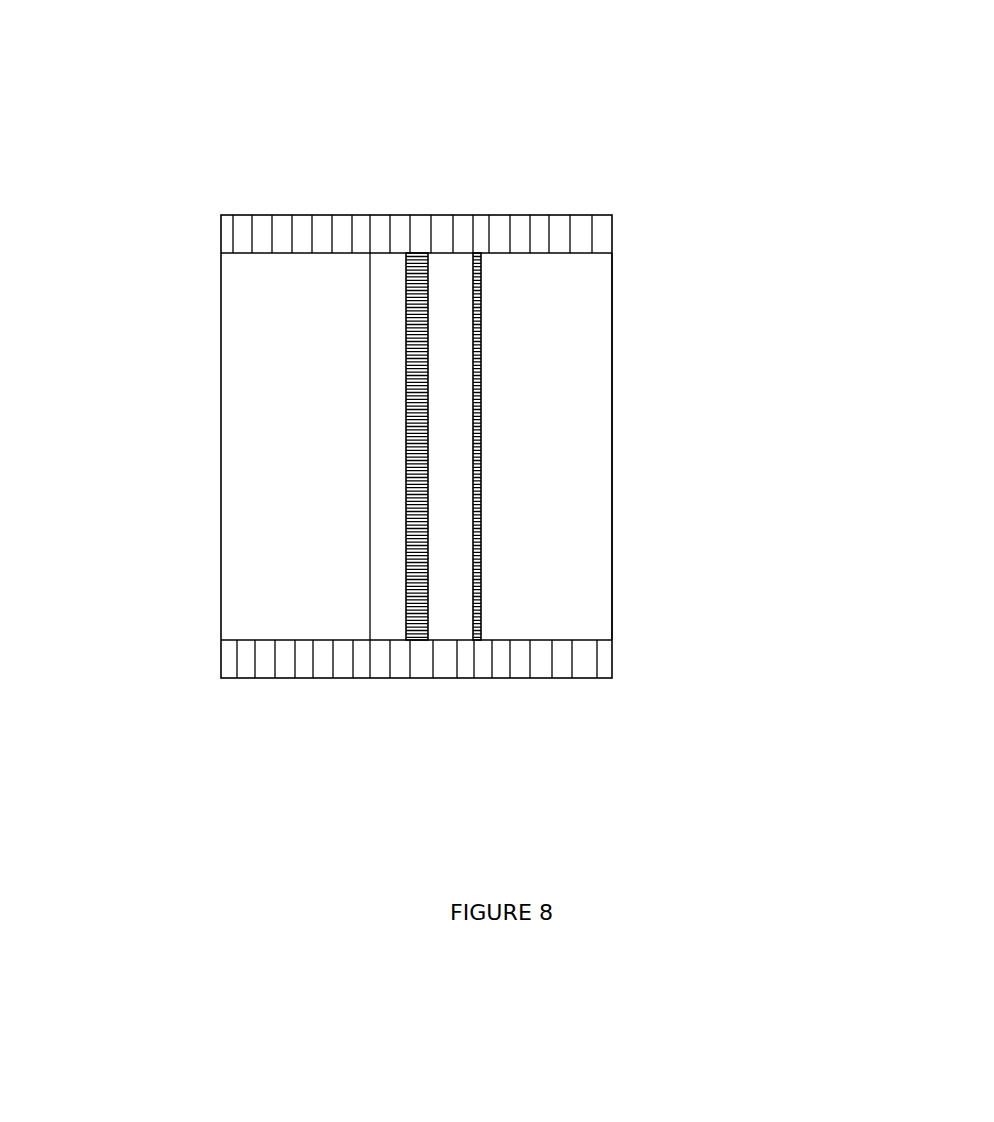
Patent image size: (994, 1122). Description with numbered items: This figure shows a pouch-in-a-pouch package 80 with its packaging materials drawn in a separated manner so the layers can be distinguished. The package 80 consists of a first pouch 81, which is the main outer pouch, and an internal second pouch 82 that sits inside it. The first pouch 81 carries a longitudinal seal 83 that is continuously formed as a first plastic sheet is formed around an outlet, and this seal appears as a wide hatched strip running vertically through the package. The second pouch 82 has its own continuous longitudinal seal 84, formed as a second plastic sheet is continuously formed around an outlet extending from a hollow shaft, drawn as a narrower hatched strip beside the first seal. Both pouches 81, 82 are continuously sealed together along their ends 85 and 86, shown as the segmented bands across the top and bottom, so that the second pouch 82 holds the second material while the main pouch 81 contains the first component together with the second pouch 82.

The package 80 is at (675, 535).
The first pouch 81 is at (592, 373).
The second pouch 82 is at (392, 268).
The longitudinal seal 83 is at (407, 470).
The longitudinal seal 84 is at (480, 267).
The end 85 is at (593, 658).
The end 86 is at (597, 240).